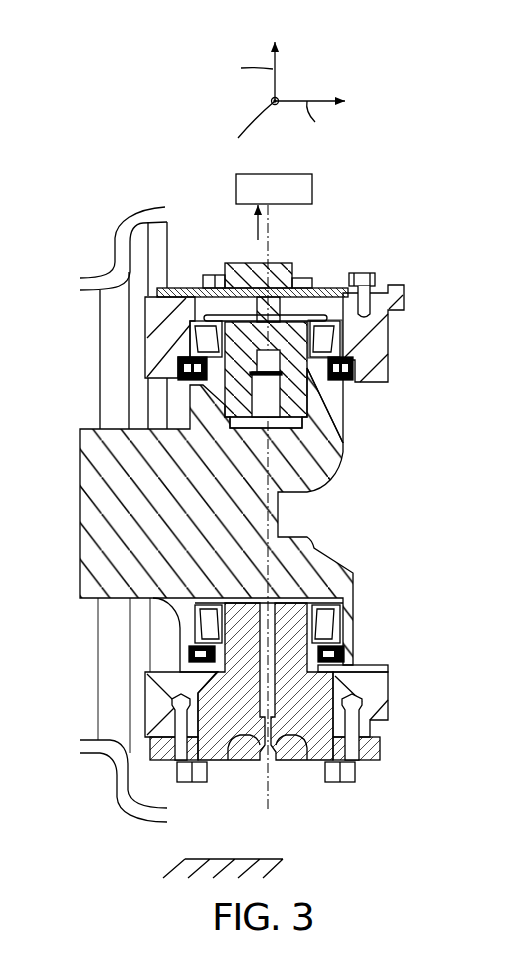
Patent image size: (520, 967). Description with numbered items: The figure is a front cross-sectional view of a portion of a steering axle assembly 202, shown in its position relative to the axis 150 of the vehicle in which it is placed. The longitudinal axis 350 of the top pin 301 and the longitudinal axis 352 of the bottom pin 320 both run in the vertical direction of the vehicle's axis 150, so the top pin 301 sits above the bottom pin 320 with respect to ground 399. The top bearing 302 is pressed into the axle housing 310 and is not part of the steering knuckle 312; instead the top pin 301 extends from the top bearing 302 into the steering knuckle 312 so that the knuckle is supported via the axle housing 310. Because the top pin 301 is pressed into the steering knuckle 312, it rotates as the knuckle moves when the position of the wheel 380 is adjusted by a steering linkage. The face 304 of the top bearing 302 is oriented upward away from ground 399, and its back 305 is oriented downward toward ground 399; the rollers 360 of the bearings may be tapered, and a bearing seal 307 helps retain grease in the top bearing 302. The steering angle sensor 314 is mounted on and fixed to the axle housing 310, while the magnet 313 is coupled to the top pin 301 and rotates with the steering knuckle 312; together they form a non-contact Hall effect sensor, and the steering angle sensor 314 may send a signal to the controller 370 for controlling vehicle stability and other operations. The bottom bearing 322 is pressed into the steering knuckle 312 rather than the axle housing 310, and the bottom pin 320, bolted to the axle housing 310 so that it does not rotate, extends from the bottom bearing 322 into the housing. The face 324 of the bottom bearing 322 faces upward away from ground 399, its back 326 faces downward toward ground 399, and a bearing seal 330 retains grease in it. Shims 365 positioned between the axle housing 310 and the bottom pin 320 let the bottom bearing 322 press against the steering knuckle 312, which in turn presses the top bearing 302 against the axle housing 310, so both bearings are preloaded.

The axis 150 is at (213, 45).
The steering axle assembly 202 is at (60, 179).
The controller 370 is at (293, 201).
The longitudinal axis 350 is at (268, 223).
The wheel 380 is at (115, 242).
The steering angle sensor 314 is at (233, 262).
The face 304 is at (328, 308).
The magnet 313 is at (243, 312).
The top bearing 302 is at (192, 338).
The rollers 360 is at (340, 333).
The axle housing 310 is at (167, 370).
The bearing seal 307 is at (352, 386).
The back 305 is at (318, 370).
The top pin 301 is at (300, 410).
The steering knuckle 312 is at (307, 492).
The face 324 is at (329, 596).
The bottom bearing 322 is at (193, 630).
The bearing seal 330 is at (352, 665).
The shims 365 is at (383, 737).
The longitudinal axis 352 is at (268, 770).
The back 326 is at (311, 650).
The bottom pin 320 is at (214, 764).
The ground 399 is at (283, 862).